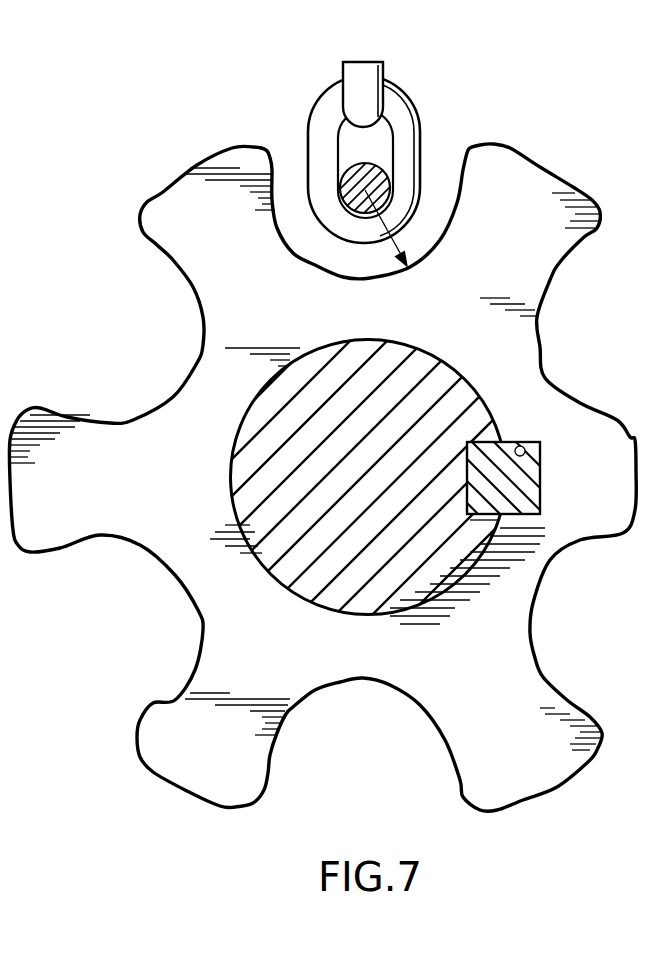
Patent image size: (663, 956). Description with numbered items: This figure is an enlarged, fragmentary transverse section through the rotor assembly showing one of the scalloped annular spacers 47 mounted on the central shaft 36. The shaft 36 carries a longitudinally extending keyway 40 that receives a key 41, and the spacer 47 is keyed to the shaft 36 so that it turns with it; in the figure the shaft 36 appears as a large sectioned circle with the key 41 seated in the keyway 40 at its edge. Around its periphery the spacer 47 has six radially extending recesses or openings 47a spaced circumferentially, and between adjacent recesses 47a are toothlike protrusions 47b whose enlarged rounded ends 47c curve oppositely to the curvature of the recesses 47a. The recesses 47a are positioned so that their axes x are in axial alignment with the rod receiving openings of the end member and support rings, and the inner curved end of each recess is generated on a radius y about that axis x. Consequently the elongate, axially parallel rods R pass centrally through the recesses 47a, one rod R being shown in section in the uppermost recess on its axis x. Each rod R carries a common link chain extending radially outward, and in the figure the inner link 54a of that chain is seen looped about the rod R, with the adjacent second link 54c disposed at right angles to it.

The scalloped annular spacer 47 is at (552, 340).
The radially extending recess 47a is at (203, 333).
The toothlike protrusion 47b is at (20, 473).
The enlarged rounded end 47c is at (27, 410).
The central shaft 36 is at (430, 560).
The longitudinally extending keyway 40 is at (520, 447).
The key 41 is at (524, 479).
The inner link 54a is at (422, 137).
The second link 54c is at (388, 86).
The longitudinally extending rod R is at (352, 170).
The axis of opening x is at (368, 190).
The radius y is at (376, 243).